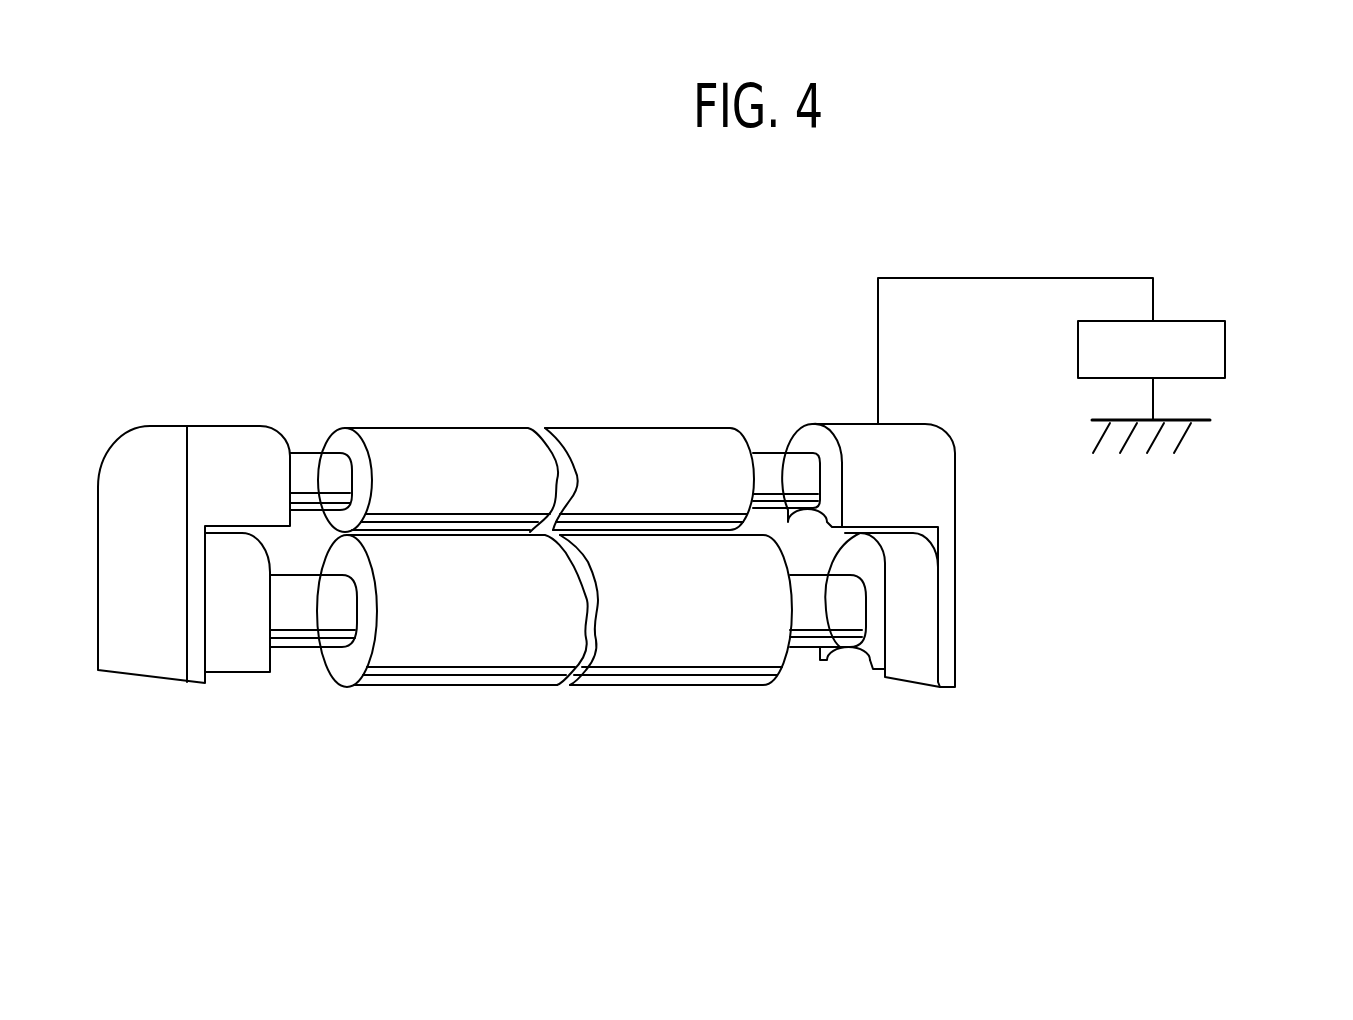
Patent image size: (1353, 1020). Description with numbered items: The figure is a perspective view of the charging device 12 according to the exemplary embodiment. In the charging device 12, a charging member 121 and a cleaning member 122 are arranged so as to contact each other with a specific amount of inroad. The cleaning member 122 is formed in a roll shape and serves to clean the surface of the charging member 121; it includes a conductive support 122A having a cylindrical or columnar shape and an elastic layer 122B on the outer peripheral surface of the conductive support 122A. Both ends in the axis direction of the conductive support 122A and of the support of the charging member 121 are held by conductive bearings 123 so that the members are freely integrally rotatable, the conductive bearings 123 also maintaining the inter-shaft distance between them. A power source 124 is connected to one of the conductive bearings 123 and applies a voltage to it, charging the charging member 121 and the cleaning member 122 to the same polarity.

The charging device 12 is at (712, 253).
The charging member 121 is at (437, 687).
The cleaning member 122 is at (463, 428).
The conductive support 122A is at (304, 452).
The elastic layer 122B is at (382, 443).
The conductive bearings 123 is at (185, 425).
The power source 124 is at (1225, 347).